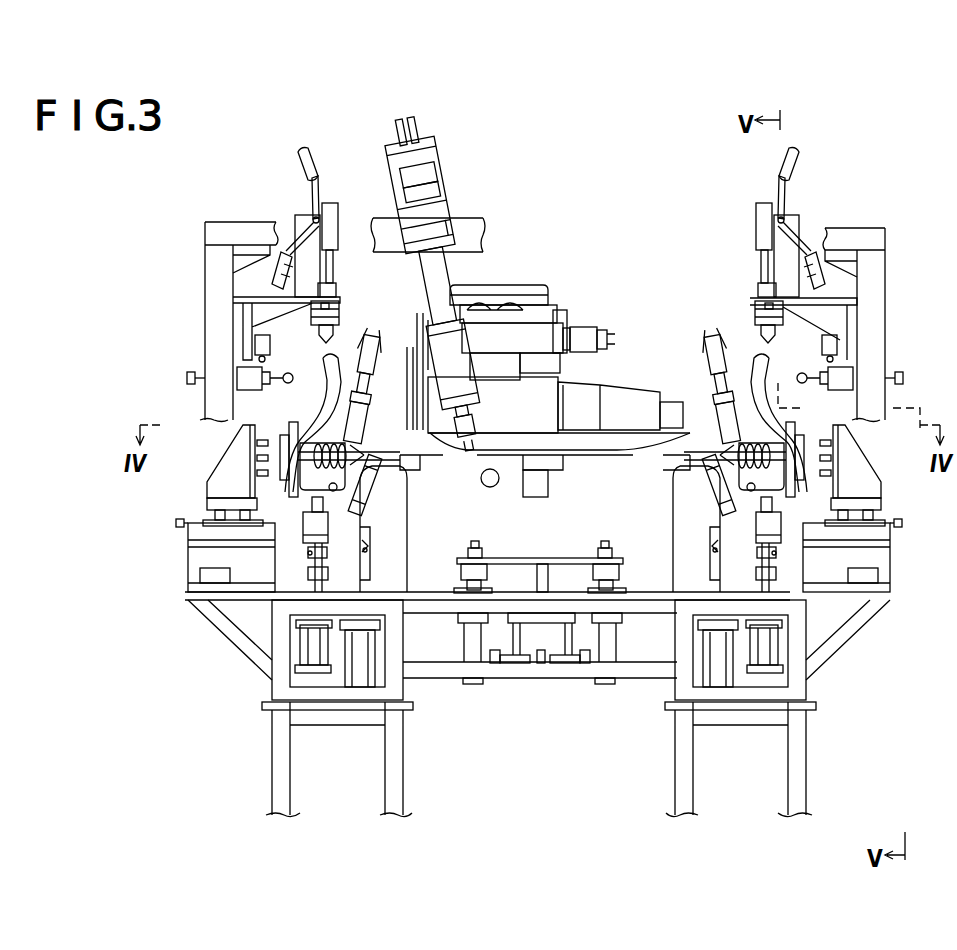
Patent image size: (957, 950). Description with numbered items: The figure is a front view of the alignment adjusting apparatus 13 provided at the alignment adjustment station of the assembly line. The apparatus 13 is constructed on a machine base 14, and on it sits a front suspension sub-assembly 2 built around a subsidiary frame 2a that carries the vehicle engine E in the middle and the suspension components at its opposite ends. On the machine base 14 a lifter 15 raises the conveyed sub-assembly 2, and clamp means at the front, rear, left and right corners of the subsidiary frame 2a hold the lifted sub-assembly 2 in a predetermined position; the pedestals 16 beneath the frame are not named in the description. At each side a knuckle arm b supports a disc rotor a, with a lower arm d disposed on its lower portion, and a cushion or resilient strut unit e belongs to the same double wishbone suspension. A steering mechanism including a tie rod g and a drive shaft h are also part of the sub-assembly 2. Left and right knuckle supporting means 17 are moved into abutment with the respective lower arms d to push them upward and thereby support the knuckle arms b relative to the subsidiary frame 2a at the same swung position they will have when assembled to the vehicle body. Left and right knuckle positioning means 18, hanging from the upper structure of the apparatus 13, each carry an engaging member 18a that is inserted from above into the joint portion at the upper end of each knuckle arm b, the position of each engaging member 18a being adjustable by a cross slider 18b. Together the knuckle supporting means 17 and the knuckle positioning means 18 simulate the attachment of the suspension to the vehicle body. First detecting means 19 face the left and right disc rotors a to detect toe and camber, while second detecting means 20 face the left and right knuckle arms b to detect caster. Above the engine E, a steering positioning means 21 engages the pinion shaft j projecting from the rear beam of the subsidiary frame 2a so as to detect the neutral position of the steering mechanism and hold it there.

The front suspension sub-assembly 2 is at (559, 345).
The subsidiary frame 2a is at (609, 422).
The vehicle engine E is at (506, 286).
The alignment adjusting apparatus 13 is at (262, 220).
The machine base 14 is at (430, 596).
The lifter 15 is at (562, 560).
The pedestal support 16 is at (424, 497).
The knuckle supporting means 17 is at (303, 562).
The knuckle positioning means 18 is at (337, 293).
The engaging member 18a is at (331, 340).
The cross slider 18b is at (343, 313).
The first detecting means 19 is at (215, 460).
The second detecting means 20 is at (289, 373).
The steering positioning means 21 is at (453, 218).
The disc rotor a is at (286, 482).
The knuckle arm b is at (335, 378).
The lower arm d is at (355, 497).
The resilient strut unit e is at (377, 346).
The tie rod g is at (325, 482).
The drive shaft h is at (364, 440).
The pinion shaft j is at (481, 490).